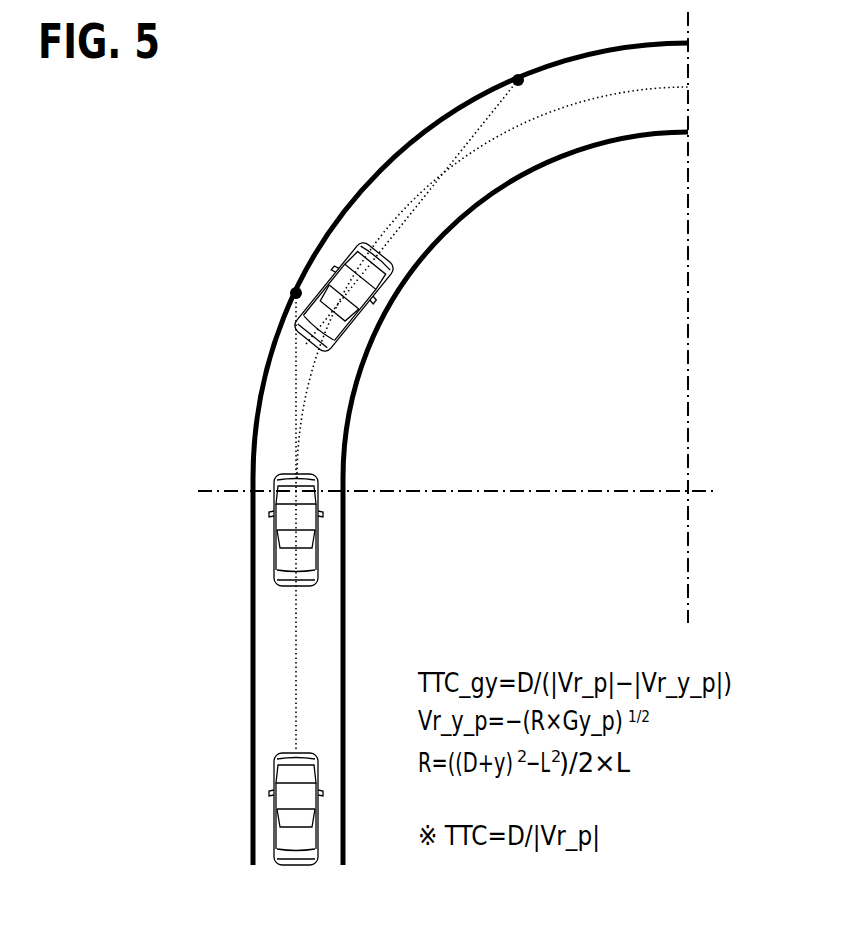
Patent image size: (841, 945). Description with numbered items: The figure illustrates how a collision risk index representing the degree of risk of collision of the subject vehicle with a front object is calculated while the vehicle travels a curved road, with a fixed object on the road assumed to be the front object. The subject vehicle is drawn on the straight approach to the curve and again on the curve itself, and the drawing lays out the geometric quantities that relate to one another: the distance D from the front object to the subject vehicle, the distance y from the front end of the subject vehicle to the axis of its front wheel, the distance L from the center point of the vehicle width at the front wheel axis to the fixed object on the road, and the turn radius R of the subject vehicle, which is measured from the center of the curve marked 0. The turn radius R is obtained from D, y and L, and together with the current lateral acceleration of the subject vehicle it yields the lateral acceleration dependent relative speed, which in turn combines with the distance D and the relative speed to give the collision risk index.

The distance from the front object to the subject vehicle D is at (198, 293).
The distance from front end of subject vehicle to axis of front wheel y is at (212, 437).
The distance from center point of vehicle width at front wheel axis to fixed object L is at (382, 241).
The turn radius of the subject vehicle R is at (472, 155).
The curve center 0 is at (704, 517).